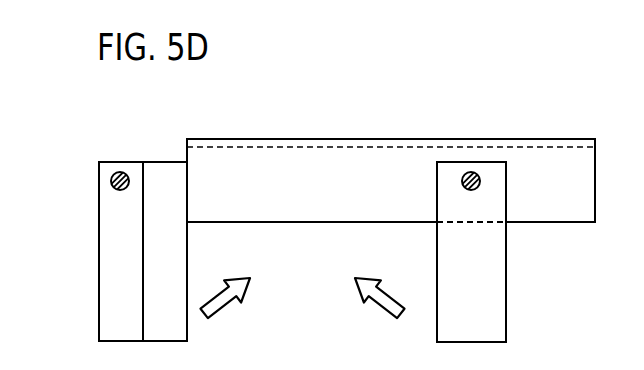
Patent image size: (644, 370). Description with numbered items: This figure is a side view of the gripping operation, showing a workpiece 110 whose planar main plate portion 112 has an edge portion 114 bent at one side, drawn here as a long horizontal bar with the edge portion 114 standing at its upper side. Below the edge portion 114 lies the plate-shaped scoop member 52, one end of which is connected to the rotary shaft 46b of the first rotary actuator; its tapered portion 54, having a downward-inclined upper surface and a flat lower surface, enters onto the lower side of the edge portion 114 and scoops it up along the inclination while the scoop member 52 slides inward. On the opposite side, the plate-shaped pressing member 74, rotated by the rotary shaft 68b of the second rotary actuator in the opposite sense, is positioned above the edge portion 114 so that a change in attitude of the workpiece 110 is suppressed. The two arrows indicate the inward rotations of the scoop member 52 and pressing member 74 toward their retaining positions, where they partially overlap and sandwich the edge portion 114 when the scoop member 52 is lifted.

The workpiece 110 is at (316, 137).
The main plate portion 112 is at (405, 143).
The edge portion 114 is at (325, 200).
The scoop member 52 is at (116, 273).
The tapered portion 54 is at (173, 253).
The rotary shaft 46b is at (120, 171).
The pressing member 74 is at (497, 273).
The rotary shaft 68b is at (472, 172).